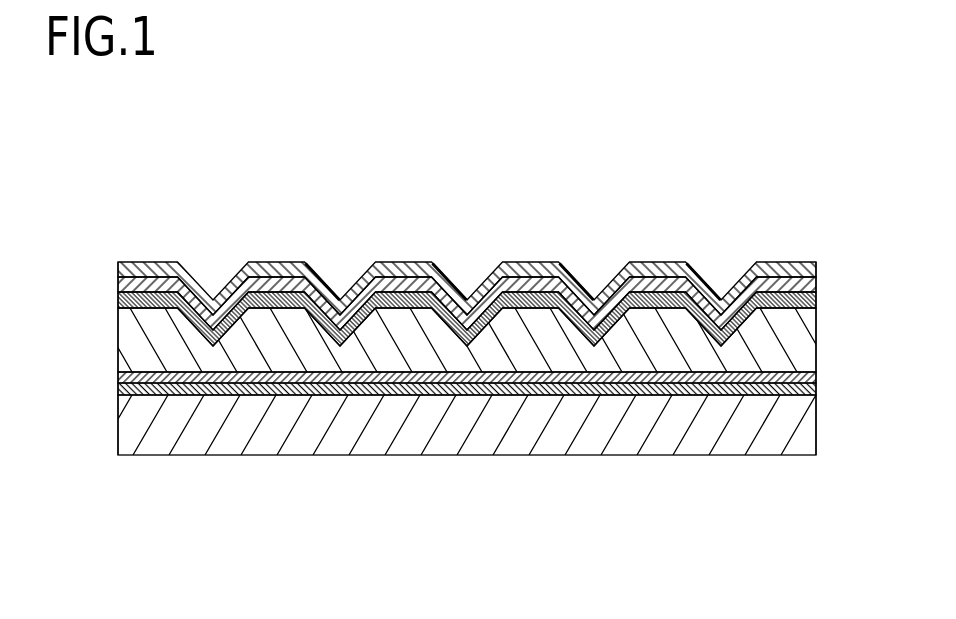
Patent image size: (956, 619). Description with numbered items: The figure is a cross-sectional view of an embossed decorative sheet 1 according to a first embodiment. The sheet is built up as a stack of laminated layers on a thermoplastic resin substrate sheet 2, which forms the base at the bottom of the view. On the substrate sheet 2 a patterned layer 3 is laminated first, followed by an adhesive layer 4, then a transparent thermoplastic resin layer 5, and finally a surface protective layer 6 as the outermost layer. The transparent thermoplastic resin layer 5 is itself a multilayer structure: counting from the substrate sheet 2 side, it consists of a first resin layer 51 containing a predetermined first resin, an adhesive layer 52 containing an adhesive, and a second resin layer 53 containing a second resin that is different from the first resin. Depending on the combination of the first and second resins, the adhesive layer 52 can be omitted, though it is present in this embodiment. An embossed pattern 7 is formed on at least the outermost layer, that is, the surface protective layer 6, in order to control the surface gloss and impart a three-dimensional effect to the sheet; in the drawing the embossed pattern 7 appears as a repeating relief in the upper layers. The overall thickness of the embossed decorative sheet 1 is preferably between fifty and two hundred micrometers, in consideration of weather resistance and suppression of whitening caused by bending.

The embossed decorative sheet 1 is at (259, 188).
The thermoplastic resin substrate sheet 2 is at (810, 435).
The patterned layer 3 is at (816, 390).
The adhesive layer 4 is at (816, 378).
The transparent thermoplastic resin layer 5 is at (509, 319).
The first resin layer 51 is at (810, 348).
The adhesive layer 52 is at (816, 303).
The second resin layer 53 is at (502, 303).
The surface protective layer 6 is at (816, 270).
The embossed pattern 7 is at (705, 278).